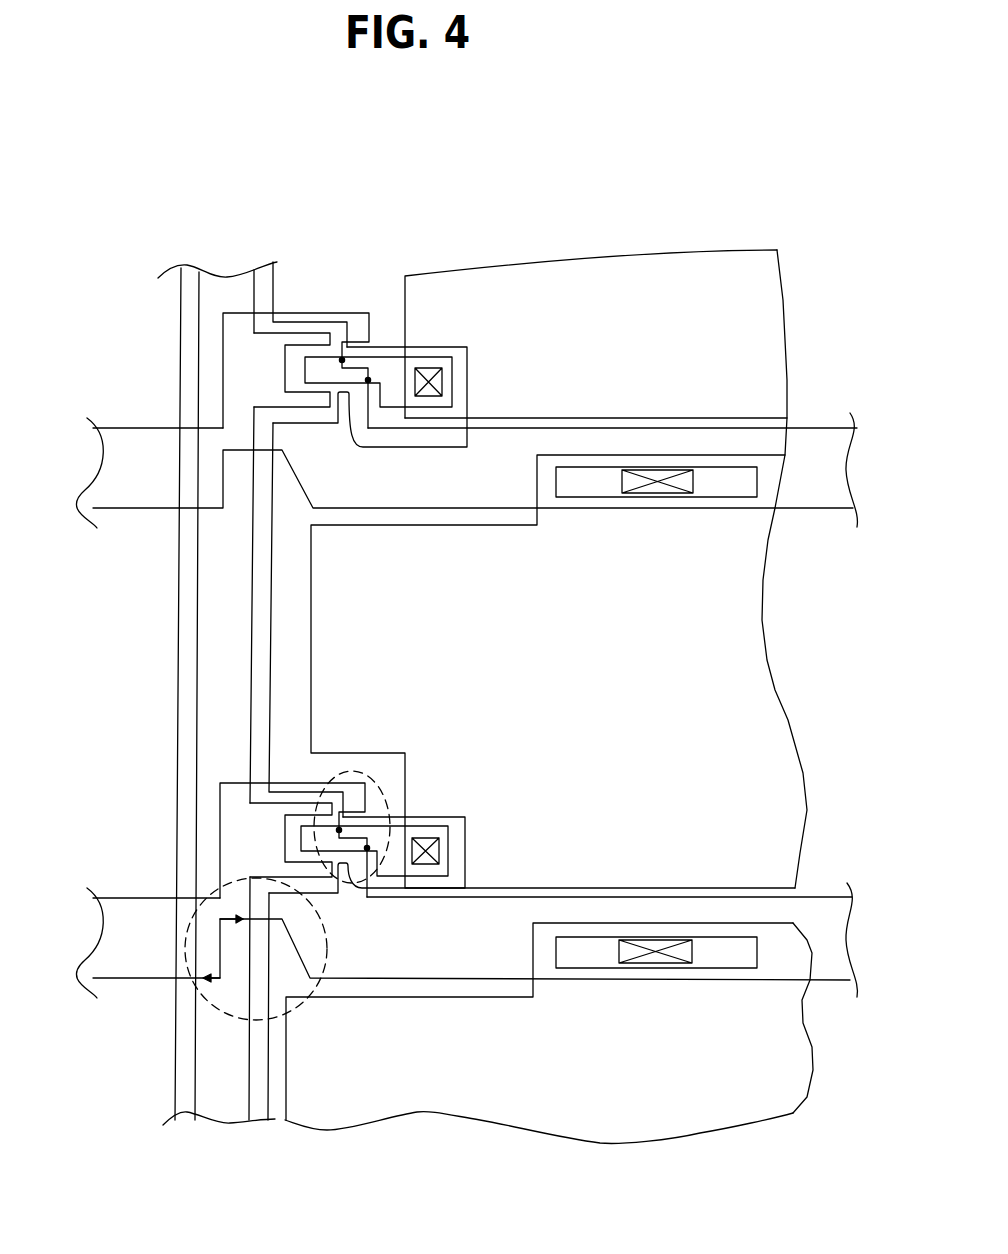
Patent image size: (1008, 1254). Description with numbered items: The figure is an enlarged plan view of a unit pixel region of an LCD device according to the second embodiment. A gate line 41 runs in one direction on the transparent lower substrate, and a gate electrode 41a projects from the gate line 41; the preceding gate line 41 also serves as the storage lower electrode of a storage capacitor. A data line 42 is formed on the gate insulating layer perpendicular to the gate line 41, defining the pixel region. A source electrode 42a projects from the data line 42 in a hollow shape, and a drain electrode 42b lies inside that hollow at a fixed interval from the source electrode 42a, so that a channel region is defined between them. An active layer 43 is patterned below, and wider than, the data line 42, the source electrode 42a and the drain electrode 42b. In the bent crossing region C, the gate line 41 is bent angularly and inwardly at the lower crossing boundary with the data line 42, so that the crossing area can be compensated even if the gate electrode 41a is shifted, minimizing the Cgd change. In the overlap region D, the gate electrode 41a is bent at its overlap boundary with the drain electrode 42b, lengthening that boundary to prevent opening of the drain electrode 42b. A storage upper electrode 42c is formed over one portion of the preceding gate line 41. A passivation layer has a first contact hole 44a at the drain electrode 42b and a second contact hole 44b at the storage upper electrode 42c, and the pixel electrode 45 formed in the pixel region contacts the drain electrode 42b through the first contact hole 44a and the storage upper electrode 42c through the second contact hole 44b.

The gate line 41 is at (372, 1000).
The gate electrode 41a is at (220, 822).
The data line 42 is at (252, 664).
The source electrode 42a is at (317, 800).
The drain electrode 42b is at (468, 862).
The storage upper electrode 42c is at (571, 497).
The active layer 43 is at (181, 584).
The first contact hole 44a is at (437, 850).
The second contact hole 44b is at (663, 487).
The pixel electrode 45 is at (790, 722).
The 'C' region C is at (187, 1002).
The 'D' region D is at (395, 795).